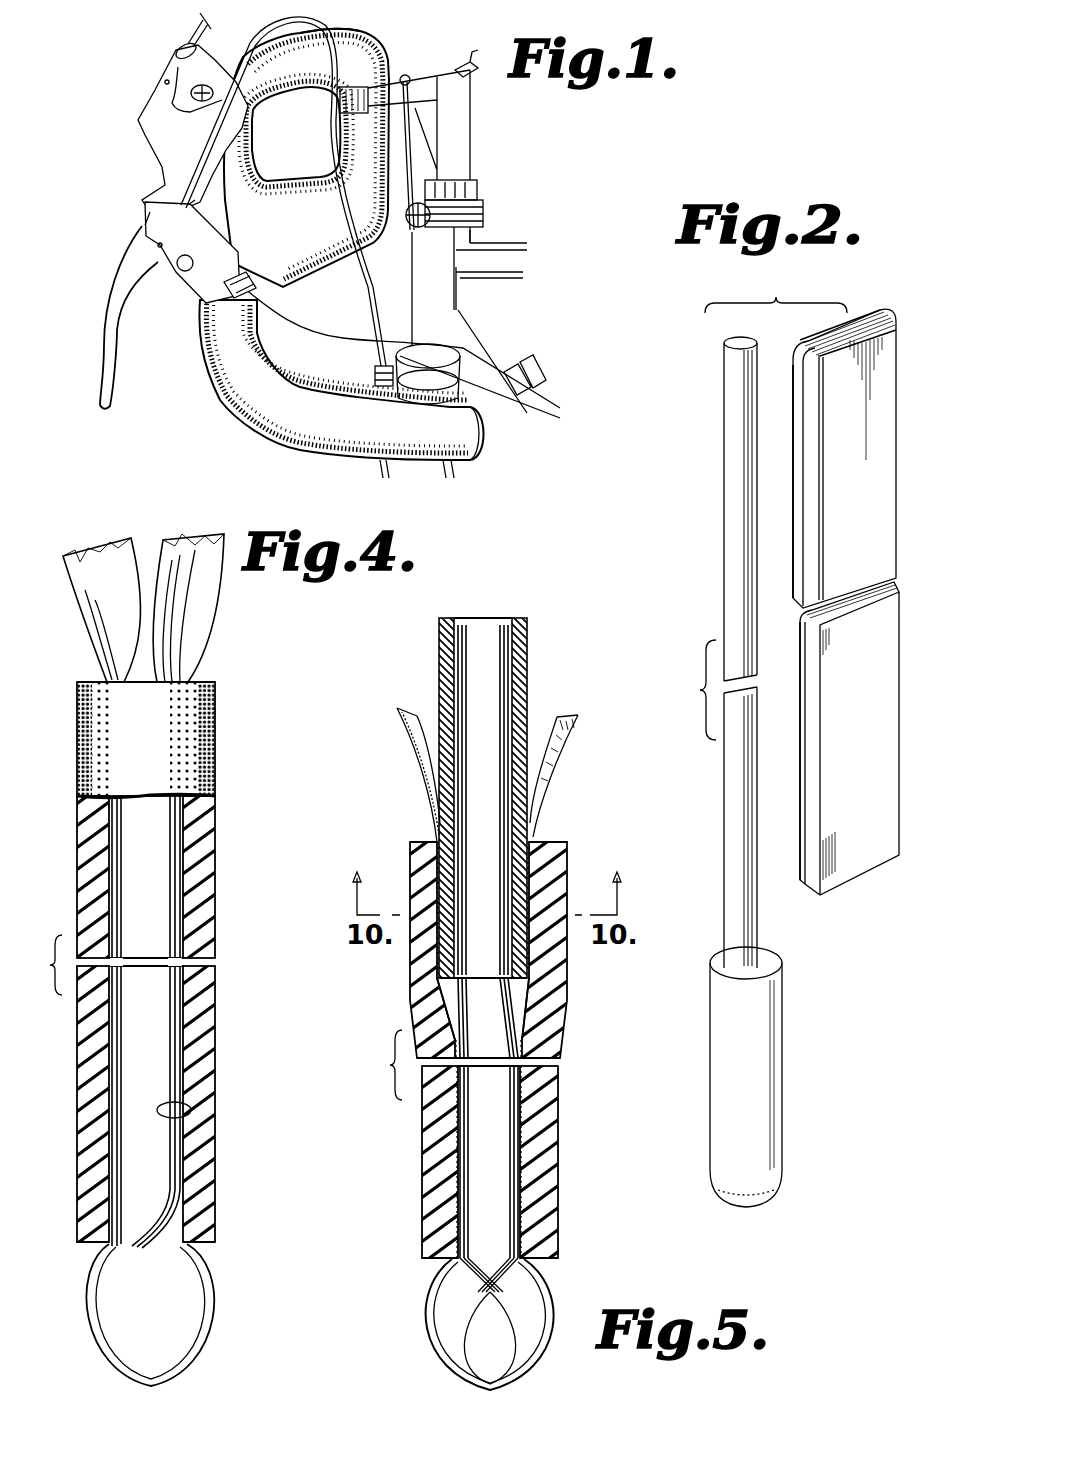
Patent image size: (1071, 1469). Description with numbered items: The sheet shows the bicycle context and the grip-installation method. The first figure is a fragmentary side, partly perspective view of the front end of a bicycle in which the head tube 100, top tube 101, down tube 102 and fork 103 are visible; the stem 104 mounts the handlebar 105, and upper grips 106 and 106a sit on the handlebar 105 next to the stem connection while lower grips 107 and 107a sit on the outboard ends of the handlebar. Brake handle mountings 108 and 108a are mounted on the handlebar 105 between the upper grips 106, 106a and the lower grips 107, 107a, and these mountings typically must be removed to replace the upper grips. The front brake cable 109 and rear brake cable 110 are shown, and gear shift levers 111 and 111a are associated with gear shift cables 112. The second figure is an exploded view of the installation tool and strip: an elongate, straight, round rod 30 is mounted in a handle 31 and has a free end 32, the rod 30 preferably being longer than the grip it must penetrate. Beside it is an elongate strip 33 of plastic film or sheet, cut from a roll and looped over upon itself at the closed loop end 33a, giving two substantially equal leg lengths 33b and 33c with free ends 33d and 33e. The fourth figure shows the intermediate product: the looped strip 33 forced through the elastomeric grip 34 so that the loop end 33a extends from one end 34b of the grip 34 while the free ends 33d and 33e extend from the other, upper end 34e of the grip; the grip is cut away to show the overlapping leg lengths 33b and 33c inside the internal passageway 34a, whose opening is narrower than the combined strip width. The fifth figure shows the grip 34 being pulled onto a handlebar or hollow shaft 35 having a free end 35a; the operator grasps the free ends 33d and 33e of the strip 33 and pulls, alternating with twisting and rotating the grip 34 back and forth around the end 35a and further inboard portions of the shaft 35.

In FIG. 1, the head tube 100 is at (448, 300).
In FIG. 1, the top tube 101 is at (491, 251).
In FIG. 1, the down tube 102 is at (545, 420).
In FIG. 1, the fork 103 is at (412, 466).
In FIG. 1, the stem 104 is at (456, 142).
In FIG. 1, the handlebar 105 is at (254, 300).
In FIG. 1, the upper grip 106 is at (318, 148).
In FIG. 1, the upper grip 106a is at (363, 32).
In FIG. 1, the lower grip 107 is at (302, 401).
In FIG. 1, the lower grip 107a is at (279, 160).
In FIG. 1, the brake handle mounting 108 is at (189, 279).
In FIG. 1, the brake handle mounting 108a is at (217, 101).
In FIG. 1, the front brake cable 109 is at (270, 18).
In FIG. 1, the rear brake cable 110 is at (198, 26).
In FIG. 1, the gear shift lever 111 is at (410, 80).
In FIG. 1, the gear shift lever 111a is at (466, 56).
In FIG. 1, the gear shift cables 112 is at (397, 377).
In FIG. 2, the rod 30 is at (735, 814).
In FIG. 2, the handle 31 is at (765, 1098).
In FIG. 2, the free end 32 is at (738, 345).
In FIG. 2, the elongate strip 33 is at (848, 601).
In FIG. 2, the looped over portion 33a is at (863, 314).
In FIG. 4, the looped over portion 33a is at (150, 1382).
In FIG. 5, the looped over portion 33a is at (492, 1385).
In FIG. 2, the leg length 33b is at (884, 517).
In FIG. 4, the leg length 33b is at (128, 1148).
In FIG. 5, the leg length 33b is at (470, 1192).
In FIG. 2, the leg length 33c is at (807, 530).
In FIG. 4, the leg length 33c is at (175, 1160).
In FIG. 5, the leg length 33c is at (508, 1200).
In FIG. 2, the free end 33d is at (874, 862).
In FIG. 4, the free end 33d is at (70, 548).
In FIG. 5, the free end 33d is at (420, 712).
In FIG. 2, the free end 33e is at (815, 877).
In FIG. 4, the free end 33e is at (210, 546).
In FIG. 5, the free end 33e is at (562, 714).
In FIG. 4, the elastomeric grip 34 is at (147, 959).
In FIG. 5, the elastomeric grip 34 is at (481, 1042).
In FIG. 4, the internal passageway 34a is at (191, 1107).
In FIG. 4, the end of sleeve 34b is at (211, 1243).
In FIG. 5, the end of sleeve 34b is at (548, 1262).
In FIG. 4, the sleeve upper end 34e is at (189, 682).
In FIG. 5, the sleeve upper end 34e is at (541, 842).
In FIG. 5, the handlebar or hollow shaft 35 is at (493, 630).
In FIG. 5, the free end 35a is at (465, 986).